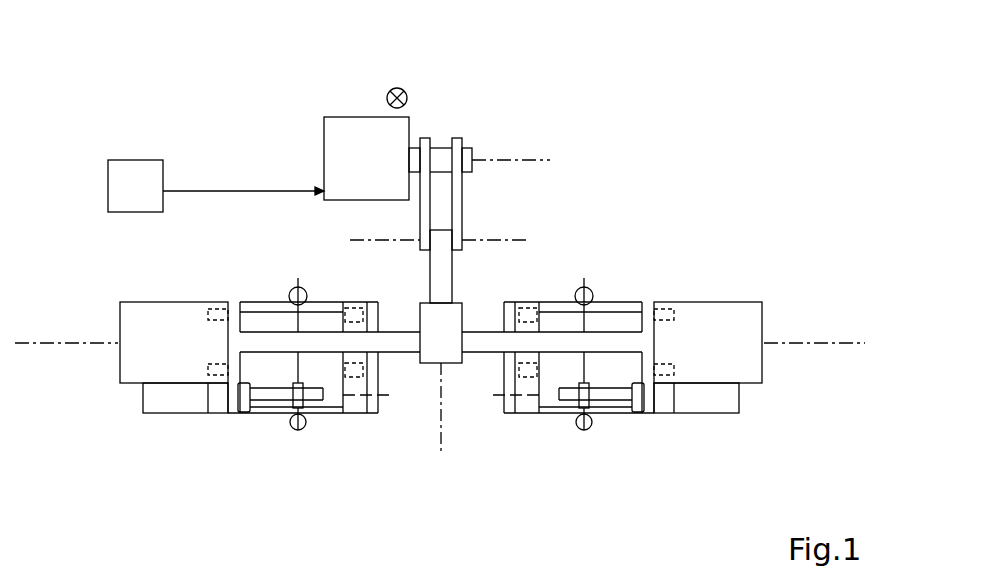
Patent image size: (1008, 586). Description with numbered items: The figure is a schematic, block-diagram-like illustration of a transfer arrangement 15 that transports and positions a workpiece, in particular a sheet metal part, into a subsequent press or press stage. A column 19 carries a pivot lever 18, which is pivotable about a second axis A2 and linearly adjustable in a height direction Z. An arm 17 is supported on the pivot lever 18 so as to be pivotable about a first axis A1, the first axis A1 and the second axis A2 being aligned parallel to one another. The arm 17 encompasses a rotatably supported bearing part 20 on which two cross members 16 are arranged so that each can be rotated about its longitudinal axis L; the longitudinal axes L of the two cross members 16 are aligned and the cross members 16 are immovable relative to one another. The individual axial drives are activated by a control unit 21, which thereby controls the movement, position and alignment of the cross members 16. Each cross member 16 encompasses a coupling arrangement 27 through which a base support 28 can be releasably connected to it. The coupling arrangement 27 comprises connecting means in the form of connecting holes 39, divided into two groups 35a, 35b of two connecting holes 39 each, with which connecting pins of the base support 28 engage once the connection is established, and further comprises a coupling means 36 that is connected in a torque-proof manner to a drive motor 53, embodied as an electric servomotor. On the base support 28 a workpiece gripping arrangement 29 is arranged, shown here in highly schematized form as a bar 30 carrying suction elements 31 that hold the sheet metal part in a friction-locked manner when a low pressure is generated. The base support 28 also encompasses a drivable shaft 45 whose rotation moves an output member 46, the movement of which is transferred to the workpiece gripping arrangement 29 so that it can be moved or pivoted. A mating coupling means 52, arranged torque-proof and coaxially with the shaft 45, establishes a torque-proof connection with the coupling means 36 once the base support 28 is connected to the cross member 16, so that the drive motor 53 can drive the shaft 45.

The transfer arrangement 15 is at (640, 103).
The cross member 16 is at (473, 347).
The arm 17 is at (442, 275).
The pivot lever 18 is at (457, 218).
The column 19 is at (340, 148).
The bearing part 20 is at (430, 312).
The control unit 21 is at (135, 178).
The coupling arrangement 27 is at (223, 425).
The base support 28 is at (358, 417).
The workpiece gripping arrangement 29 is at (287, 272).
The bar 30 is at (300, 322).
The suction element 31 is at (287, 295).
The group of connecting holes 35a is at (203, 325).
The group of connecting holes 35b is at (357, 298).
The coupling means 36 is at (212, 403).
The connecting hole 39 is at (207, 315).
The shaft 45 is at (283, 395).
The output member 46 is at (310, 407).
The mating coupling means 52 is at (243, 405).
The drive motor 53 is at (158, 403).
The first axis A1 is at (513, 237).
The second axis A2 is at (507, 157).
The height direction Z is at (407, 87).
The longitudinal axis L is at (83, 345).